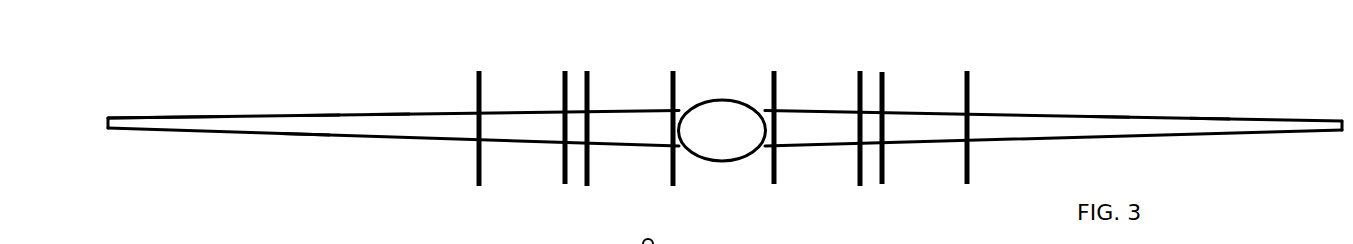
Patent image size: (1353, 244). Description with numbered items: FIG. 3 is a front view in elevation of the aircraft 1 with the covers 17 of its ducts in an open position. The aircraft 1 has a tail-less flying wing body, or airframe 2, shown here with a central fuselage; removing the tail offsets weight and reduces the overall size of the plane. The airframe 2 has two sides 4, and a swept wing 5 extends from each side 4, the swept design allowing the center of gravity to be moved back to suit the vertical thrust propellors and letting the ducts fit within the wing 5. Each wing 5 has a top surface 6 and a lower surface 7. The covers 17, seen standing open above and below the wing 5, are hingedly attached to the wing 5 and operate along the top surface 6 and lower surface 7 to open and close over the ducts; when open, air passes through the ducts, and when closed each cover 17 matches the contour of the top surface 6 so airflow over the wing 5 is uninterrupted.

The aircraft 1 is at (815, 108).
The airframe 2 is at (718, 117).
The side 4 is at (328, 125).
The wing 5 is at (395, 125).
The top surface 6 is at (222, 118).
The lower surface 7 is at (300, 135).
The cover 17 is at (967, 95).